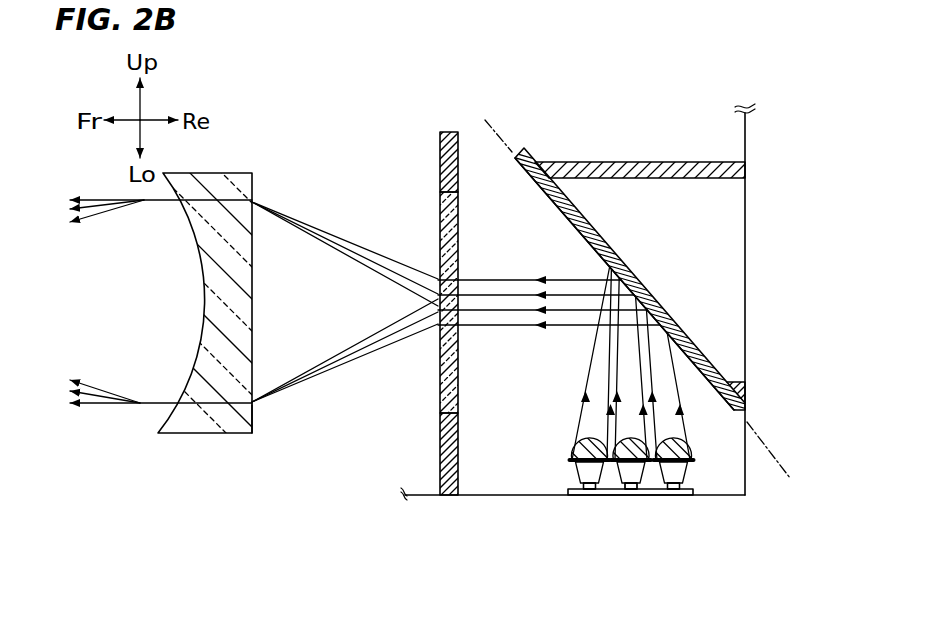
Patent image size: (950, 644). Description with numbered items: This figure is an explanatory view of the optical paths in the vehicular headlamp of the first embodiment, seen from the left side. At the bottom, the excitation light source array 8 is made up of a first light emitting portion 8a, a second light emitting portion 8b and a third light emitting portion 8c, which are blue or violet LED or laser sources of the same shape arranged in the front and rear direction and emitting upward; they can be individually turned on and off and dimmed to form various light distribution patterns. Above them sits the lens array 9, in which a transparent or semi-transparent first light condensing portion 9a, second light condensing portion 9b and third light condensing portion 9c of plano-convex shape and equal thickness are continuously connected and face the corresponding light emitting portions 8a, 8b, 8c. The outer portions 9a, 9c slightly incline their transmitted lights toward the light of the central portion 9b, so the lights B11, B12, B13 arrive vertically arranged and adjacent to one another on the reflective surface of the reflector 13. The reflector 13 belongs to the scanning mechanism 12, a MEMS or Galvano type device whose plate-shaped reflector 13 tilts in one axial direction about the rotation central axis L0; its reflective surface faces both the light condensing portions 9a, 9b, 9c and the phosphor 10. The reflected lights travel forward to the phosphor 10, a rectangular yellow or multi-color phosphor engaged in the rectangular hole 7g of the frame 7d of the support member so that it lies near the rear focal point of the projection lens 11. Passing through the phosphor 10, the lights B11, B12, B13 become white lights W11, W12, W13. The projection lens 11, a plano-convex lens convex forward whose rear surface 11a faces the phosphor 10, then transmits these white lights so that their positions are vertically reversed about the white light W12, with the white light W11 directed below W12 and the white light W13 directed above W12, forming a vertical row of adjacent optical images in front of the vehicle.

The projection lens 11 is at (206, 170).
The rear surface 11a is at (254, 436).
The frame 7d is at (450, 131).
The rectangular hole 7g is at (438, 414).
The phosphor 10 is at (459, 402).
The scanning mechanism 12 is at (635, 272).
The reflector 13 is at (648, 300).
The excitation light source array 8 is at (702, 491).
The first light emitting portion 8a is at (586, 489).
The second light emitting portion 8b is at (630, 490).
The third light emitting portion 8c is at (673, 490).
The lens array 9 is at (699, 458).
The first light condensing portion 9a is at (571, 460).
The second light condensing portion 9b is at (616, 460).
The third light condensing portion 9c is at (659, 461).
The light B11 is at (470, 279).
The light B12 is at (522, 312).
The light B13 is at (473, 327).
The white light W11 is at (108, 215).
The white light W12 is at (102, 204).
The white light W13 is at (84, 198).
The rotation central axis L0 is at (497, 126).